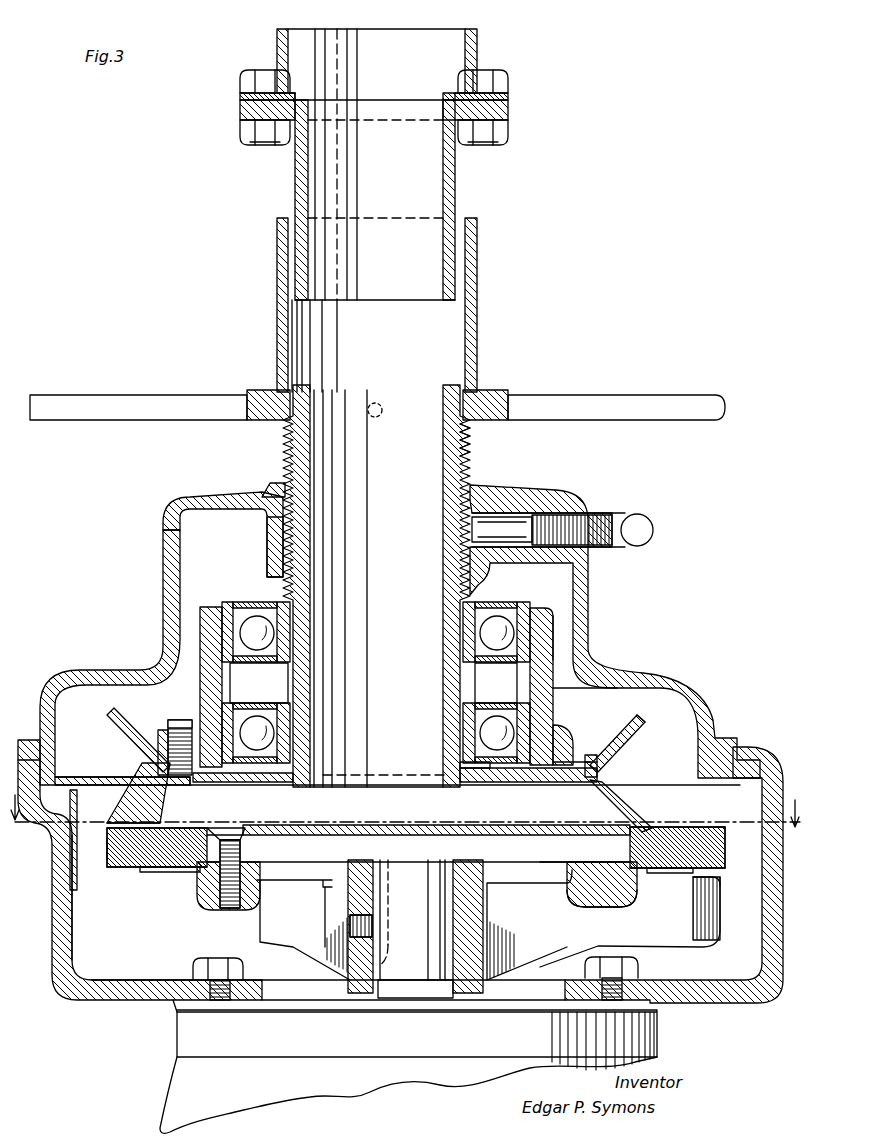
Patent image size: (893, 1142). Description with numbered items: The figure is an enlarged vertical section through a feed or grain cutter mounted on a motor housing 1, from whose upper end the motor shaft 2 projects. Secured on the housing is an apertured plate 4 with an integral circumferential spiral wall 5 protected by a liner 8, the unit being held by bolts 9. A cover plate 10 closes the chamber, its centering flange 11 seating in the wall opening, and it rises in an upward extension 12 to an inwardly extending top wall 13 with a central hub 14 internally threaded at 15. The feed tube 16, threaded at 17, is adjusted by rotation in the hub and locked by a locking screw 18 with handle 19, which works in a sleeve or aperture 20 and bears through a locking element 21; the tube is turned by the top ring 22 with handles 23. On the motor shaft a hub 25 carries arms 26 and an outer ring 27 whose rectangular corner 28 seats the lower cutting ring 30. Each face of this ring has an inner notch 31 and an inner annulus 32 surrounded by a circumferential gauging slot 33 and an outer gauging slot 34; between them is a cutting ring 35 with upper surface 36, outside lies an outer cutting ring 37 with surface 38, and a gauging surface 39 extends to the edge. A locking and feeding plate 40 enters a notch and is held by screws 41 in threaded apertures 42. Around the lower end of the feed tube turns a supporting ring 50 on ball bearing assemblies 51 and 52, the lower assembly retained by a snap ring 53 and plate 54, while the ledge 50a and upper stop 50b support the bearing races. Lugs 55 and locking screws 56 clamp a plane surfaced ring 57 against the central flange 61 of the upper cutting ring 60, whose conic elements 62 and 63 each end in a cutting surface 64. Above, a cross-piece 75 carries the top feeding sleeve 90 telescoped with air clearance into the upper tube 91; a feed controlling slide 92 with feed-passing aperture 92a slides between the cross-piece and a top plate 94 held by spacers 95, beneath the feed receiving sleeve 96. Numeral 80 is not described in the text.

The motor housing 1 is at (172, 1102).
The motor shaft 2 is at (420, 921).
The apertured plate 4 is at (128, 1030).
The circumferential spiral wall 5 is at (52, 920).
The liner 8 is at (74, 942).
The bolts 9 is at (205, 958).
The cover plate 10 is at (78, 661).
The centering flange 11 is at (56, 765).
The upward extension 12 is at (590, 592).
The top wall 13 is at (218, 497).
The central hub 14 is at (267, 545).
The internal screw thread 15 is at (272, 484).
The feed tube 16 is at (443, 590).
The outer screw thread 17 is at (470, 462).
The locking screw 18 is at (565, 515).
The hand-engaging handle 19 is at (646, 524).
The sleeve or aperture 20 is at (579, 498).
The locking element 21 is at (495, 517).
The top ring 22 is at (490, 400).
The handles 23 is at (100, 395).
The hub 25 is at (484, 866).
The arms 26 is at (506, 896).
The outer ring 27 is at (590, 905).
The rectangular corner 28 is at (606, 906).
The cutting ring 30 is at (106, 868).
The inner notch 31 is at (218, 828).
The inner annulus 32 is at (200, 828).
The circumferential gauging slot 33 is at (166, 868).
The outer gauging slot 34 is at (140, 868).
The cutting ring 35 is at (152, 873).
The upper surface 36 is at (118, 820).
The outer cutting ring 37 is at (110, 828).
The outer surface 38 is at (697, 828).
The gauging surface 39 is at (722, 830).
The locking and feeding plate 40 is at (332, 828).
The screws 41 is at (241, 848).
The threaded apertures 42 is at (230, 911).
The supporting ring 50 is at (589, 686).
The ledge or stop 50a is at (505, 698).
The upper stop 50b is at (553, 650).
The upper ball bearing assembly 51 is at (274, 640).
The lower ball bearing assembly 52 is at (258, 720).
The snap ring or locking ring 53 is at (462, 782).
The ring or plate 54 is at (500, 782).
The ears or lugs 55 is at (164, 735).
The locking screws 56 is at (180, 720).
The plane surfaced ring 57 is at (262, 785).
The upper cutting ring 60 is at (600, 760).
The central flange 61 is at (158, 770).
The lower conic cutting element 62 is at (606, 790).
The upper conic cutting element 63 is at (624, 736).
The cutting surface 64 is at (639, 718).
The cross-piece 75 is at (508, 110).
The casing lip 80 is at (27, 740).
The top feeding sleeve 90 is at (456, 170).
The upper tube 91 is at (478, 265).
The feed controlling slide 92 is at (455, 96).
The feed-passing aperture 92a is at (360, 100).
The top plate 94 is at (508, 96).
The spacers 95 is at (240, 103).
The feed receiving sleeve 96 is at (478, 33).